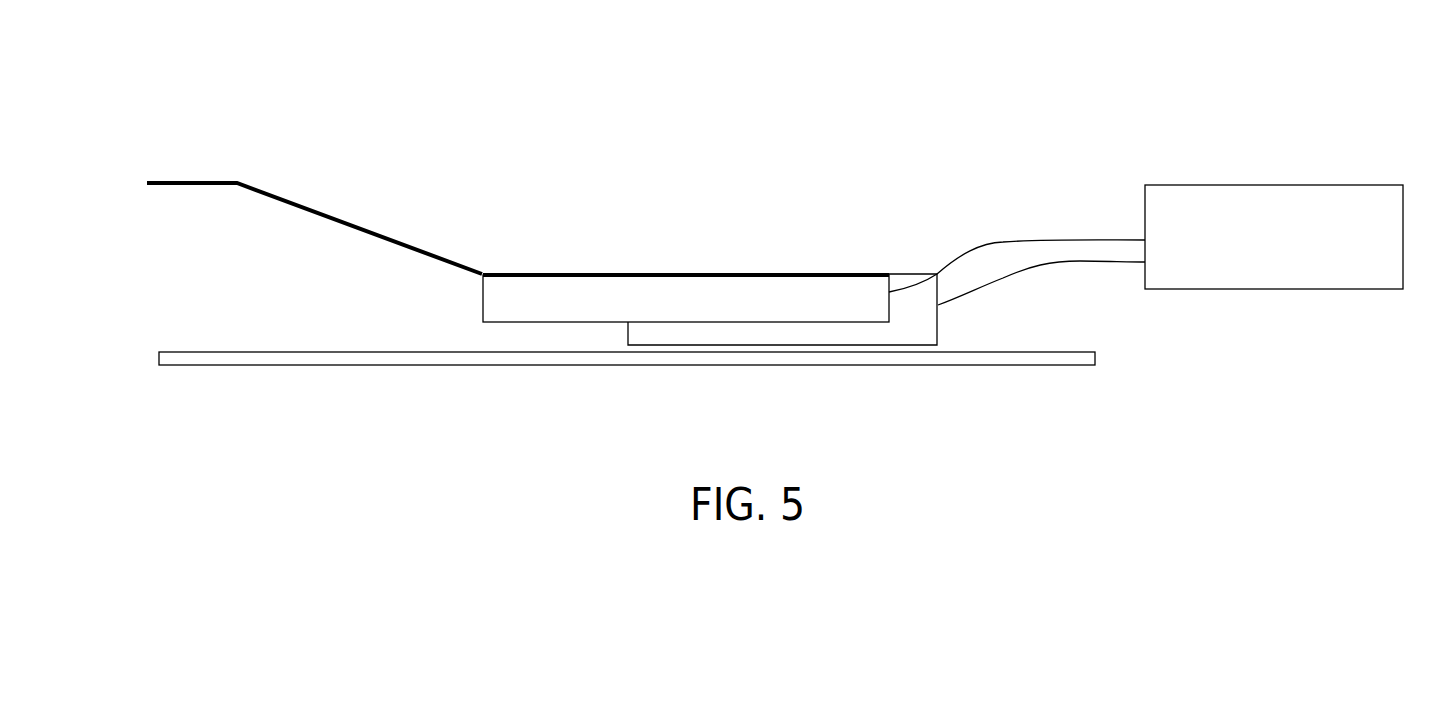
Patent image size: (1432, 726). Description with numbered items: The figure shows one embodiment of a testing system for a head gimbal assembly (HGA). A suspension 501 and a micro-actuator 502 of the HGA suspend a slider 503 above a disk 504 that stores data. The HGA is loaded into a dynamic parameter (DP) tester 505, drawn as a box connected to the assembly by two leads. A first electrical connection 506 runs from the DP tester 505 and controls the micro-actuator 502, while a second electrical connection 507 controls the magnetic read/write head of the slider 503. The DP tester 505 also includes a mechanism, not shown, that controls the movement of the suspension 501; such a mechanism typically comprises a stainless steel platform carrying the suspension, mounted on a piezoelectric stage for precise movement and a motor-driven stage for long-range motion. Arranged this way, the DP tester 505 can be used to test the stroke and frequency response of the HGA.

The suspension 501 is at (409, 236).
The micro-actuator 502 is at (479, 297).
The slider 503 is at (902, 271).
The disk 504 is at (987, 374).
The dynamic parameter (DP) tester 505 is at (1223, 183).
The first electrical connection 506 is at (1040, 237).
The second electrical connection 507 is at (1044, 275).